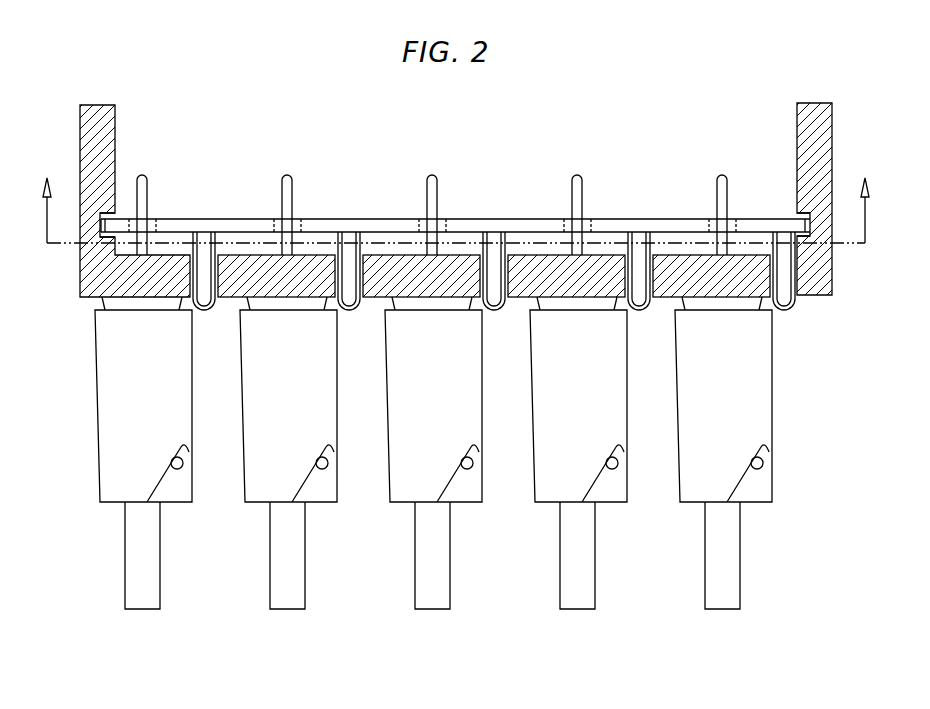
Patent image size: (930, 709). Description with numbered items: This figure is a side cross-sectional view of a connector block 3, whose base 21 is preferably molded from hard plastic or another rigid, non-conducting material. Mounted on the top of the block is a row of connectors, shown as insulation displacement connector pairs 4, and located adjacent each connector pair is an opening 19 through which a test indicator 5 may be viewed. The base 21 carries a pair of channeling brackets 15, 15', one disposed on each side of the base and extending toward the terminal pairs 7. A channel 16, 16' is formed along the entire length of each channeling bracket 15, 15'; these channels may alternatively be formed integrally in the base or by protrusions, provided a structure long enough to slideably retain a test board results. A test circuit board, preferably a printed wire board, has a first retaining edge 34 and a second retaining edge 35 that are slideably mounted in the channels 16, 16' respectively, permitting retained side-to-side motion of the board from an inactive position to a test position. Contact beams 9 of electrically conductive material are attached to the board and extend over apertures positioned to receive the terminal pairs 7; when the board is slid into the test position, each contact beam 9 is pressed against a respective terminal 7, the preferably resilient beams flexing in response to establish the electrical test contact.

The connector block 3 is at (825, 551).
The insulation displacement connector pair 4 is at (105, 396).
The test indicator 5 is at (787, 305).
The terminal pair 7 is at (717, 175).
The contact beam 9 is at (733, 217).
The channeling bracket 15 is at (135, 191).
The channeling bracket 15' is at (786, 188).
The channel 16 is at (123, 194).
The channel 16' is at (787, 198).
The opening 19 is at (789, 282).
The base 21 is at (90, 298).
The first retaining edge 34 is at (108, 228).
The second retaining edge 35 is at (803, 225).